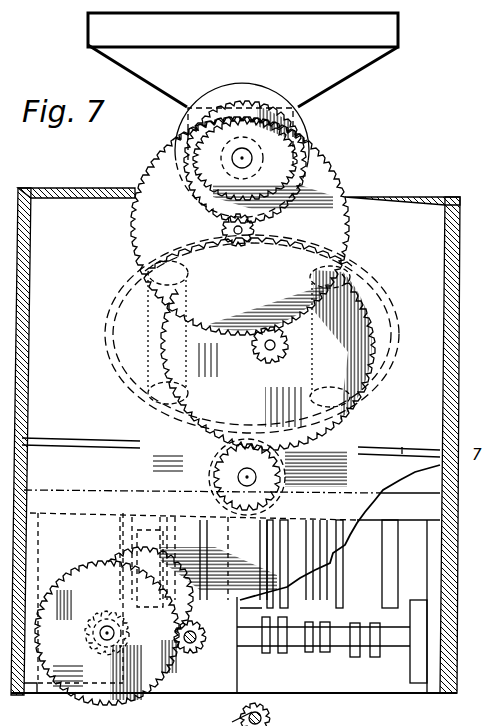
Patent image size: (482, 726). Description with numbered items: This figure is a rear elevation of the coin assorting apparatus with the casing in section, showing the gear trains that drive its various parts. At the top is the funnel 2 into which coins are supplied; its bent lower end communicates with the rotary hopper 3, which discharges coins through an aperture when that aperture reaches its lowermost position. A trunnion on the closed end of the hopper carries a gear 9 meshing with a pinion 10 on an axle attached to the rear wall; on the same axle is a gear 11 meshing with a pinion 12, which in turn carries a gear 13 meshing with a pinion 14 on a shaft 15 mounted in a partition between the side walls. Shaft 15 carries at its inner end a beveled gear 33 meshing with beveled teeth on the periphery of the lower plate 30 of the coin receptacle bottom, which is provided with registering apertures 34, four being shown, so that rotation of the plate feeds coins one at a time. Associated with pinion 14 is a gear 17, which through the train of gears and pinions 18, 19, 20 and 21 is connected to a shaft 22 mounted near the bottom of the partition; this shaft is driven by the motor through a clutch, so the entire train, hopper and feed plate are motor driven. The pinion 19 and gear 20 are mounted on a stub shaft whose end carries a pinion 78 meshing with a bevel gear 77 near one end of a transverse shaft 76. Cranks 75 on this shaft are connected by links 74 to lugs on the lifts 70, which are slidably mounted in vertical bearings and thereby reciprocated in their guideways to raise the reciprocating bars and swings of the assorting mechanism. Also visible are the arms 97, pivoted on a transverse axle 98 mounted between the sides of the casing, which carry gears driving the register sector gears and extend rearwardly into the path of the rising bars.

The funnel 2 is at (323, 80).
The rotary hopper 3 is at (274, 91).
The gear 9 is at (216, 115).
The pinion 10 is at (305, 198).
The gear 11 is at (320, 180).
The pinion 12 is at (288, 347).
The gear 13 is at (363, 363).
The pinion 14 is at (276, 490).
The shaft 15 is at (250, 477).
The gear 17 is at (138, 468).
The gear 18 is at (122, 558).
The pinion 19 is at (107, 649).
The gear 20 is at (117, 700).
The gear 21 is at (196, 648).
The shaft 22 is at (186, 651).
The lower plate 30 is at (142, 401).
The beveled gear 33 is at (210, 493).
The apertures 34 is at (160, 290).
The lifts 70 is at (373, 588).
The link 74 is at (376, 612).
The crank 75 is at (326, 655).
The transverse shaft 76 is at (392, 647).
The bevel gear 77 is at (80, 566).
The pinion 78 is at (92, 648).
The arms 97 is at (250, 714).
The transverse axle 98 is at (265, 717).